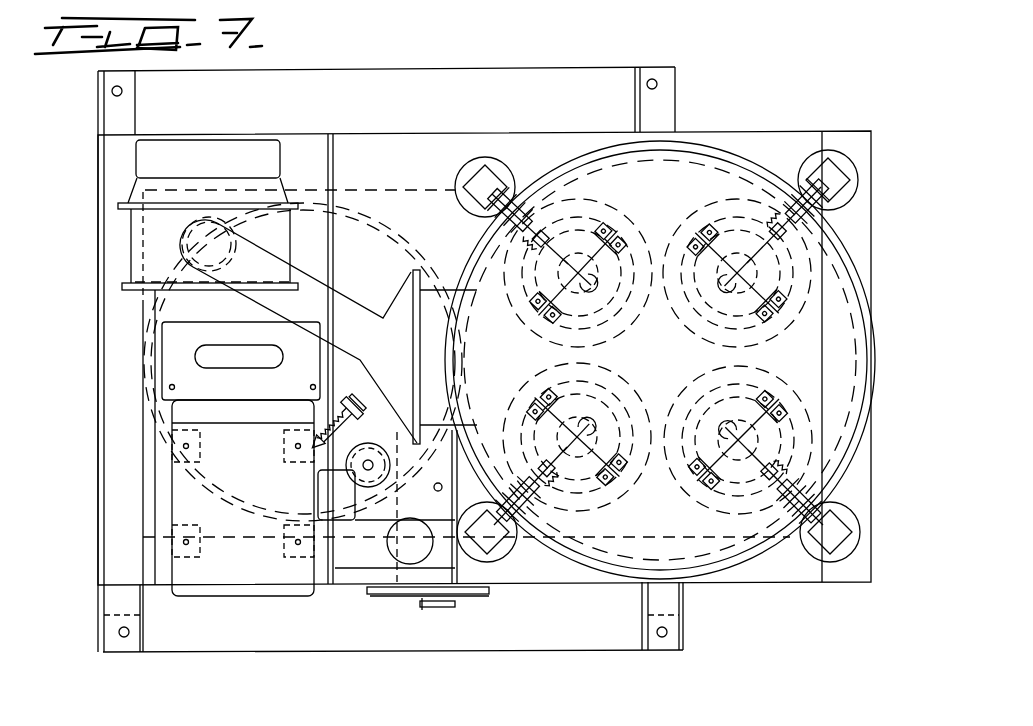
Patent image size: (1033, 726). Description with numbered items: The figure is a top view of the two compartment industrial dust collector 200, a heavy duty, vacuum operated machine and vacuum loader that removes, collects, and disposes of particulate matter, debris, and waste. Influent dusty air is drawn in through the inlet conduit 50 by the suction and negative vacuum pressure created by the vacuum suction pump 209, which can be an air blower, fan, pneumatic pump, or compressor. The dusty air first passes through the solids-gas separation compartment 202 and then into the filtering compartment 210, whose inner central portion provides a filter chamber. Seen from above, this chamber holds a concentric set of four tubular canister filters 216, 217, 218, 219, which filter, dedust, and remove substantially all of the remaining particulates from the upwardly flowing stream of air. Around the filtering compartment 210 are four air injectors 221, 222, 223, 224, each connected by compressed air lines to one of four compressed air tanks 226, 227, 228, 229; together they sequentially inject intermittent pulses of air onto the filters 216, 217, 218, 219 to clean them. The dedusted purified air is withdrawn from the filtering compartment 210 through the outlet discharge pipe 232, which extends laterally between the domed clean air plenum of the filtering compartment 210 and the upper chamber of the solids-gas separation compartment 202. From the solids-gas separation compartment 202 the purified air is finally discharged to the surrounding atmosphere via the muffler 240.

The inlet conduit 50 is at (428, 602).
The two compartment industrial dust collector 200 is at (724, 604).
The solids-gas separation compartment 202 is at (152, 292).
The vacuum suction pump 209 is at (168, 404).
The filtering compartment 210 is at (738, 150).
The tubular filter 216 is at (606, 223).
The tubular filter 217 is at (795, 275).
The tubular filter 218 is at (800, 441).
The tubular filter 219 is at (568, 497).
The air injector 221 is at (503, 200).
The air injector 222 is at (820, 212).
The air injector 223 is at (823, 498).
The air injector 224 is at (516, 527).
The compressed air tank 226 is at (477, 158).
The compressed air tank 227 is at (836, 152).
The compressed air tank 228 is at (858, 544).
The compressed air tank 229 is at (472, 562).
The outlet discharge pipe 232 is at (350, 292).
The muffler 240 is at (382, 479).